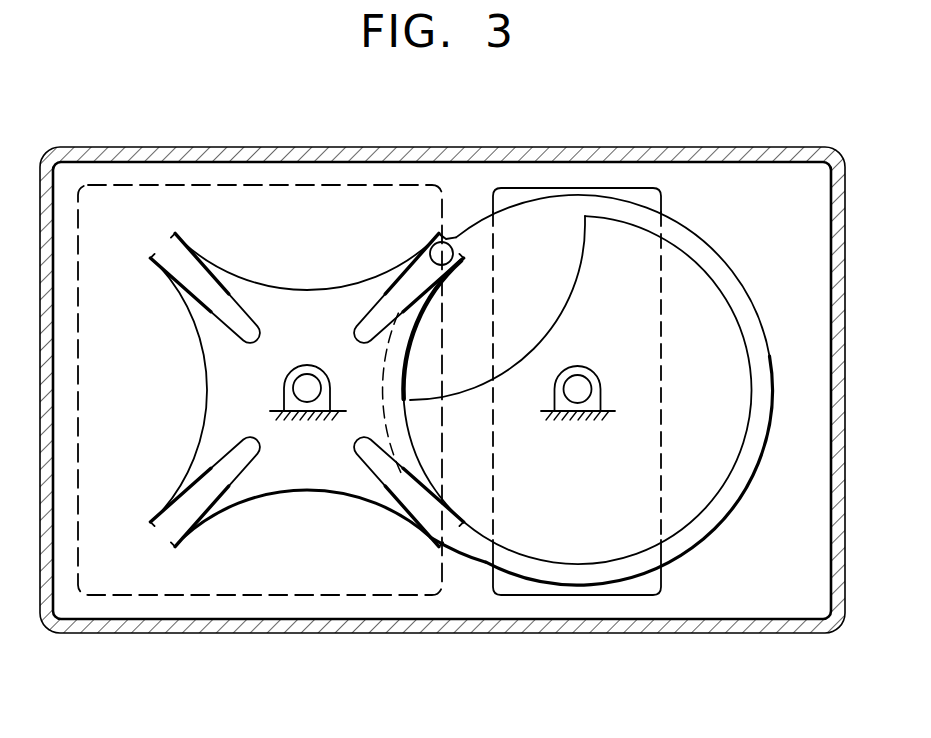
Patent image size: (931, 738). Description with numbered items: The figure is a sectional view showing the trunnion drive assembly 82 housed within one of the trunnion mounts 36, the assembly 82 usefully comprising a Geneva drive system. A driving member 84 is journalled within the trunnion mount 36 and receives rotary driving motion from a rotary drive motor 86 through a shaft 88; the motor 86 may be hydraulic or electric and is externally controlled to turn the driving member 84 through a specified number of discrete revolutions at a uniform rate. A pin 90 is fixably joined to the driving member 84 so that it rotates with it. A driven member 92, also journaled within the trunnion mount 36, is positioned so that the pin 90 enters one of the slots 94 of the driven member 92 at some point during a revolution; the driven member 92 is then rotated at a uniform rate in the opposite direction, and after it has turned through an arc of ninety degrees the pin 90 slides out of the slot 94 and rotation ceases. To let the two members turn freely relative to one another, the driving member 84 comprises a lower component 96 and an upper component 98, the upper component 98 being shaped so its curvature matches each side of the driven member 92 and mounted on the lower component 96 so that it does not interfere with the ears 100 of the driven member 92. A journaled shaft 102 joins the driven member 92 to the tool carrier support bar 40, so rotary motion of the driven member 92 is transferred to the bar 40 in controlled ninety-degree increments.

The trunnion mount 36 is at (405, 634).
The tool carrier support bar 40 is at (183, 597).
The trunnion drive assembly 82 is at (736, 250).
The driving member 84 is at (748, 342).
The rotary drive motor 86 is at (612, 596).
The shaft 88 is at (585, 391).
The pin 90 is at (453, 247).
The driven member 92 is at (237, 277).
The slots 94 is at (200, 283).
The lower component 96 is at (745, 499).
The upper component 98 is at (563, 300).
The ears 100 is at (150, 256).
The journaled shaft 102 is at (296, 393).